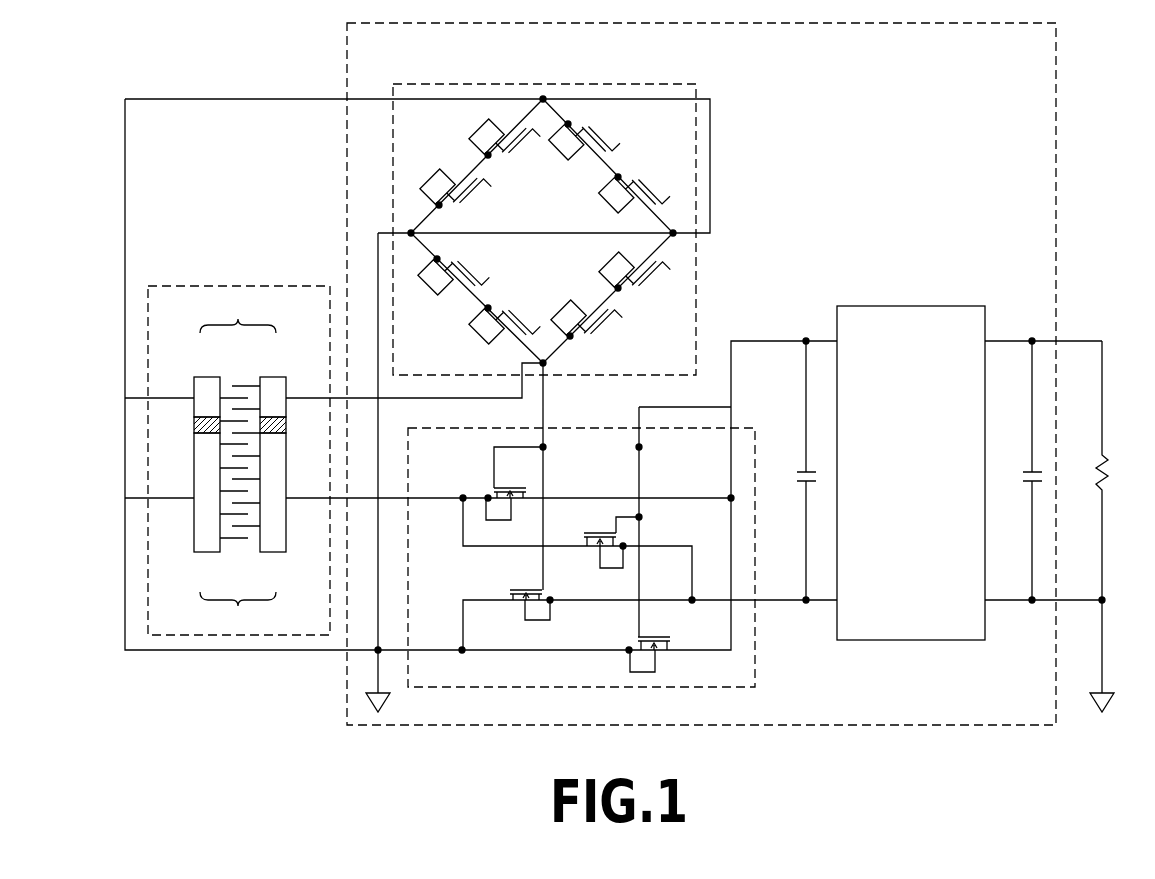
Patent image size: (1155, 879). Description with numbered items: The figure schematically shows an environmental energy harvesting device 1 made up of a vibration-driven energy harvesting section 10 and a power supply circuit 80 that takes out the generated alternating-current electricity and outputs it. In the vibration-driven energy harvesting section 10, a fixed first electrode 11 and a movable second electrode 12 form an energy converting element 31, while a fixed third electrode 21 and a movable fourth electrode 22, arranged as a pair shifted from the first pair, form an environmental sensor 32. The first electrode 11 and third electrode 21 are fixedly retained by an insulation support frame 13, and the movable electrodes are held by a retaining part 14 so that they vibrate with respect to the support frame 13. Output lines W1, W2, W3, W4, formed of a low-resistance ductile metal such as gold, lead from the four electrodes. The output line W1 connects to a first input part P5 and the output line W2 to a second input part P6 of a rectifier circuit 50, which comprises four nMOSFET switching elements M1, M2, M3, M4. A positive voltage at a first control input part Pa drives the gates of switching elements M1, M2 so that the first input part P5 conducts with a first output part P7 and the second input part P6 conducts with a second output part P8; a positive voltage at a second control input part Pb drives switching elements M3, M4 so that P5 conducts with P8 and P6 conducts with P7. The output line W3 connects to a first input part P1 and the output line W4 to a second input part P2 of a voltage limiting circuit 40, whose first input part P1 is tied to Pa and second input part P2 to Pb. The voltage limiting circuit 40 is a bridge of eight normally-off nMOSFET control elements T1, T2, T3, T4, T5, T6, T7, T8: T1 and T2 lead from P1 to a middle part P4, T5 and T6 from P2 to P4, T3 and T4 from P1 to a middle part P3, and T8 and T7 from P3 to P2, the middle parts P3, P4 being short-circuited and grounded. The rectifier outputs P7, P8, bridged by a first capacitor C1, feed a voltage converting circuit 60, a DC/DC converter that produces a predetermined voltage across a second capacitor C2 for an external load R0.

The environmental energy harvesting device 1 is at (197, 52).
The vibration-driven energy harvesting section 10 is at (210, 286).
The first electrode 11 is at (270, 552).
The second electrode 12 is at (207, 552).
The insulation support frame 13 is at (286, 425).
The retaining part 14 is at (194, 425).
The third electrode 21 is at (270, 377).
The fourth electrode 22 is at (207, 377).
The energy converting element 31 is at (238, 609).
The environmental sensor 32 is at (238, 315).
The voltage limiting circuit 40 is at (630, 84).
The rectifier circuit 50 is at (757, 660).
The voltage converting circuit 60 is at (877, 306).
The power supply circuit 80 is at (347, 70).
The control element T1 is at (593, 319).
The control element T2 is at (642, 271).
The control element T3 is at (503, 329).
The control element T4 is at (448, 276).
The control element T5 is at (591, 141).
The control element T6 is at (641, 194).
The control element T7 is at (496, 138).
The control element T8 is at (449, 188).
The switching element M1 is at (512, 487).
The switching element M2 is at (522, 593).
The switching element M3 is at (603, 539).
The switching element M4 is at (642, 645).
The first capacitor C1 is at (796, 470).
The second capacitor C2 is at (1021, 470).
The external load R0 is at (1091, 526).
The first input part P1 is at (546, 366).
The second input part P2 is at (543, 99).
The middle part P3 is at (411, 233).
The middle part P4 is at (675, 232).
The first input part P5 is at (455, 487).
The second input part P6 is at (460, 662).
The first output part P7 is at (719, 487).
The second output part P8 is at (700, 612).
The first control input part Pa is at (557, 449).
The second control input part Pb is at (653, 449).
The output line W1 is at (508, 510).
The output line W2 is at (159, 510).
The output line W3 is at (414, 380).
The output line W4 is at (159, 388).